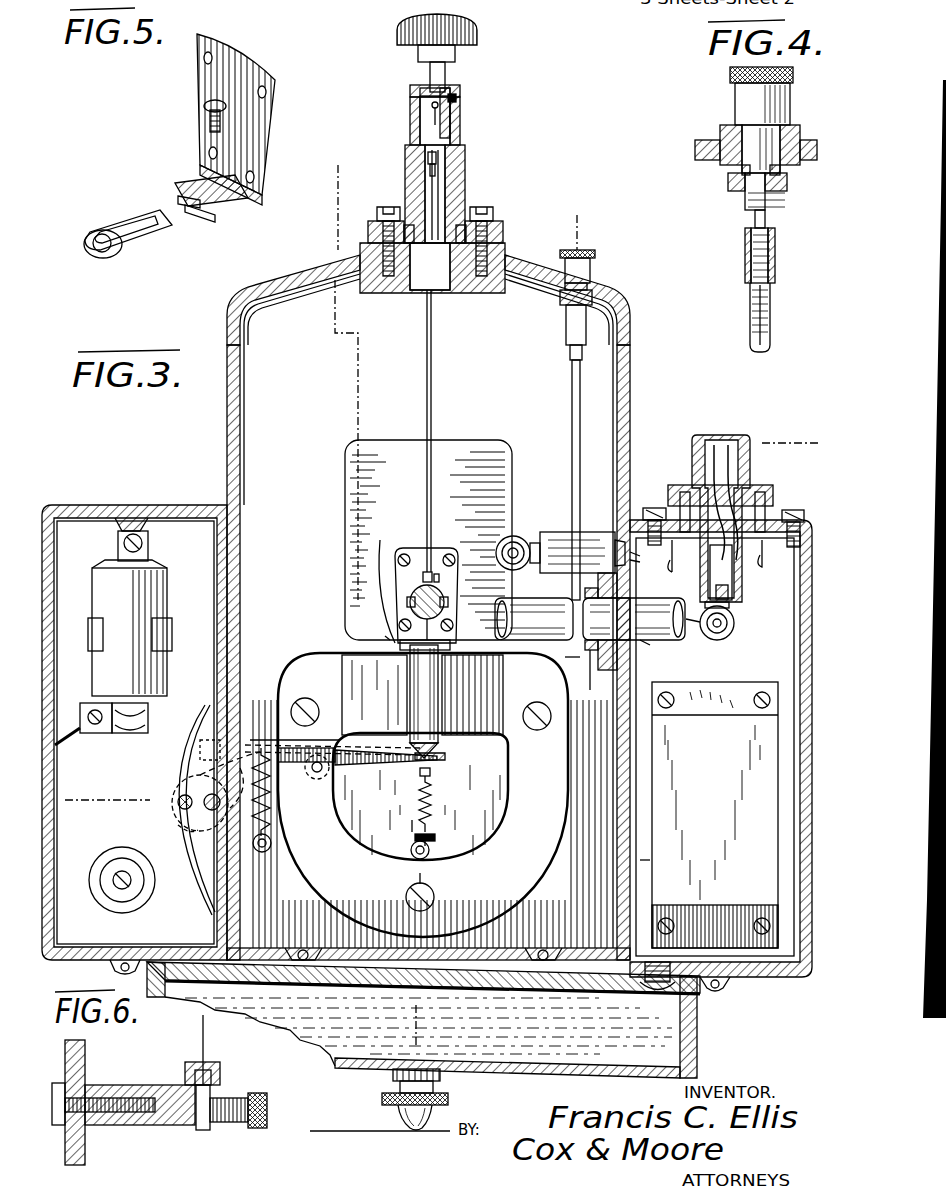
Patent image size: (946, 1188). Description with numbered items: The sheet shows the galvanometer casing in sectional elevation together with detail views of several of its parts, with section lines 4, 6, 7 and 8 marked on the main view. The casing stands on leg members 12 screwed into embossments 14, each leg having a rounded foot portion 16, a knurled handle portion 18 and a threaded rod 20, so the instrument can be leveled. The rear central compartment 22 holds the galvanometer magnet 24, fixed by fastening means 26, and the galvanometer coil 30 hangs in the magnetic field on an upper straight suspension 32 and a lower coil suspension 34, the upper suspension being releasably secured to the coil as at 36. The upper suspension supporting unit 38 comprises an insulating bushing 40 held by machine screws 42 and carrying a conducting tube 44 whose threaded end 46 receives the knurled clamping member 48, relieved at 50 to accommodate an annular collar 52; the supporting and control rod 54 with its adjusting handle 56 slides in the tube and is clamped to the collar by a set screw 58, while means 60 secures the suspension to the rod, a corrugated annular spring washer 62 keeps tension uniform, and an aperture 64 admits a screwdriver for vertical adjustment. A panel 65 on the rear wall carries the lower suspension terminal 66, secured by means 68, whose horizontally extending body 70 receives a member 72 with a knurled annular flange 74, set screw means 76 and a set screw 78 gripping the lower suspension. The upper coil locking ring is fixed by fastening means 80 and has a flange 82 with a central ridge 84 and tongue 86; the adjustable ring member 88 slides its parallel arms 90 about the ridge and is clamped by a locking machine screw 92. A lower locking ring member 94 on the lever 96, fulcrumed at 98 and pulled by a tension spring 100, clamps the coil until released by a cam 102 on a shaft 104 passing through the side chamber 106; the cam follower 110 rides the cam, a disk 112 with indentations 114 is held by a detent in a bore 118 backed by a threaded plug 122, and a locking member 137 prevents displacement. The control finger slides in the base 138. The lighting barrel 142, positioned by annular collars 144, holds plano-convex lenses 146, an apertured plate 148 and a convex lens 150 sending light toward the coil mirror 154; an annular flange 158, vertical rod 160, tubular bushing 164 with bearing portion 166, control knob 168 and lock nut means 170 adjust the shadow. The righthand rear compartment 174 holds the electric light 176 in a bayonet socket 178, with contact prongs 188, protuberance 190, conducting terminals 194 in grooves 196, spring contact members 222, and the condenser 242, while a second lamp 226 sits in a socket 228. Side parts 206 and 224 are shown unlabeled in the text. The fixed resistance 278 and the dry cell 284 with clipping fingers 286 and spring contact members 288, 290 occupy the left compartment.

In FIG. 3, the leg member 12 is at (455, 1100).
In FIG. 3, the embossment 14 is at (440, 1075).
In FIG. 3, the foot portion 16 is at (408, 1133).
In FIG. 3, the knurled handle portion 18 is at (390, 1100).
In FIG. 3, the threaded rod 20 is at (395, 1090).
In FIG. 3, the central compartment 22 is at (303, 278).
In FIG. 3, the galvanometer magnet 24 is at (505, 890).
In FIG. 3, the fastening means 26 is at (305, 696).
In FIG. 3, the galvanometer coil 30 is at (410, 676).
In FIG. 3, the upper straight suspension 32 is at (436, 358).
In FIG. 3, the lower coil suspension 34 is at (430, 797).
In FIG. 6, the lower coil suspension 34 is at (205, 1066).
In FIG. 3, the releasable securing point 36 is at (438, 560).
In FIG. 3, the upper suspension supporting unit 38 is at (480, 168).
In FIG. 3, the insulating bushing 40 is at (470, 200).
In FIG. 3, the machine screws 42 is at (383, 207).
In FIG. 3, the conducting tube 44 is at (460, 153).
In FIG. 3, the threaded upper end 46 is at (462, 135).
In FIG. 3, the knurled clamping member 48 is at (410, 108).
In FIG. 3, the interior relief 50 is at (410, 96).
In FIG. 3, the annular collar 52 is at (450, 90).
In FIG. 3, the supporting and control rod 54 is at (430, 70).
In FIG. 3, the adjusting handle 56 is at (407, 30).
In FIG. 3, the set screw 58 is at (430, 112).
In FIG. 3, the securing means 60 is at (408, 165).
In FIG. 3, the corrugated annular spring washer 62 is at (425, 88).
In FIG. 3, the aperture 64 is at (455, 100).
In FIG. 3, the panel 65 is at (372, 448).
In FIG. 6, the panel 65 is at (85, 1050).
In FIG. 3, the lower suspension terminal 66 is at (400, 853).
In FIG. 6, the lower suspension terminal 66 is at (153, 1135).
In FIG. 6, the securing means 68 is at (108, 1125).
In FIG. 6, the horizontally extending body 70 is at (138, 1090).
In FIG. 6, the member 72 is at (210, 1130).
In FIG. 3, the knurled annular flange 74 is at (432, 838).
In FIG. 6, the knurled annular flange 74 is at (190, 1072).
In FIG. 3, the set screw means 76 is at (432, 852).
In FIG. 6, the set screw means 76 is at (245, 1100).
In FIG. 6, the set screw 78 is at (215, 1078).
In FIG. 3, the fastening means 80 is at (402, 555).
In FIG. 3, the outwardly projecting flange 82 is at (385, 623).
In FIG. 5, the outwardly projecting flange 82 is at (215, 210).
In FIG. 5, the central ridge 84 is at (198, 182).
In FIG. 5, the tongue 86 is at (175, 195).
In FIG. 3, the adjustable ring member 88 is at (462, 650).
In FIG. 5, the adjustable ring member 88 is at (95, 255).
In FIG. 5, the parallel arms 90 is at (162, 222).
In FIG. 5, the locking machine screw 92 is at (205, 105).
In FIG. 3, the lower locking ring member 94 is at (437, 758).
In FIG. 3, the lever 96 is at (360, 762).
In FIG. 3, the fulcrum 98 is at (315, 782).
In FIG. 3, the tension spring 100 is at (272, 830).
In FIG. 3, the cam 102 is at (178, 820).
In FIG. 3, the shaft 104 is at (208, 812).
In FIG. 3, the side chamber 106 is at (88, 507).
In FIG. 3, the cam follower 110 is at (245, 748).
In FIG. 3, the disk 112 is at (266, 855).
In FIG. 3, the indentations 114 is at (240, 770).
In FIG. 3, the bore 118 is at (178, 825).
In FIG. 3, the adjustable threaded plug 122 is at (180, 800).
In FIG. 3, the locking member 137 is at (275, 750).
In FIG. 3, the base 138 is at (550, 993).
In FIG. 3, the cylindrical barrel 142 is at (650, 645).
In FIG. 3, the annular collars 144 is at (600, 670).
In FIG. 3, the plano-convex lenses 146 is at (680, 630).
In FIG. 3, the apertured plate 148 is at (634, 619).
In FIG. 3, the convex lens 150 is at (510, 624).
In FIG. 3, the galvanometer coil mirror 154 is at (425, 570).
In FIG. 3, the annular flange 158 is at (563, 662).
In FIG. 3, the vertical rod 160 is at (572, 407).
In FIG. 4, the vertical rod 160 is at (752, 308).
In FIG. 3, the tubular bushing 164 is at (570, 328).
In FIG. 4, the tubular bushing 164 is at (745, 249).
In FIG. 4, the bearing portion 166 is at (755, 135).
In FIG. 3, the control knob 168 is at (590, 262).
In FIG. 4, the control knob 168 is at (745, 99).
In FIG. 3, the lock nut means 170 is at (600, 297).
In FIG. 4, the lock nut means 170 is at (730, 188).
In FIG. 3, the righthand rear compartment 174 is at (640, 860).
In FIG. 3, the electric light 176 is at (733, 622).
In FIG. 3, the bayonet socket 178 is at (735, 595).
In FIG. 3, the contact prongs 188 is at (655, 510).
In FIG. 3, the protuberance 190 is at (730, 436).
In FIG. 3, the conducting terminals 194 is at (715, 490).
In FIG. 3, the grooves 196 is at (752, 488).
In FIG. 3, the plunger 206 is at (730, 578).
In FIG. 3, the spring contact members 222 is at (716, 565).
In FIG. 3, the flange 224 is at (808, 505).
In FIG. 3, the second lamp 226 is at (521, 537).
In FIG. 3, the socket 228 is at (590, 532).
In FIG. 3, the condenser 242 is at (665, 803).
In FIG. 3, the fixed resistance 278 is at (110, 890).
In FIG. 3, the source of electrical current 284 is at (162, 588).
In FIG. 3, the resilient clipping fingers 286 is at (105, 625).
In FIG. 3, the upper spring contact member 288 is at (118, 548).
In FIG. 3, the lower spring contact member 290 is at (150, 715).
In FIG. 3, the section line 4— 4 is at (590, 232).
In FIG. 3, the section line 6— 6 is at (415, 826).
In FIG. 3, the section line 7— 7 is at (812, 445).
In FIG. 3, the section line 8— 8 is at (352, 194).